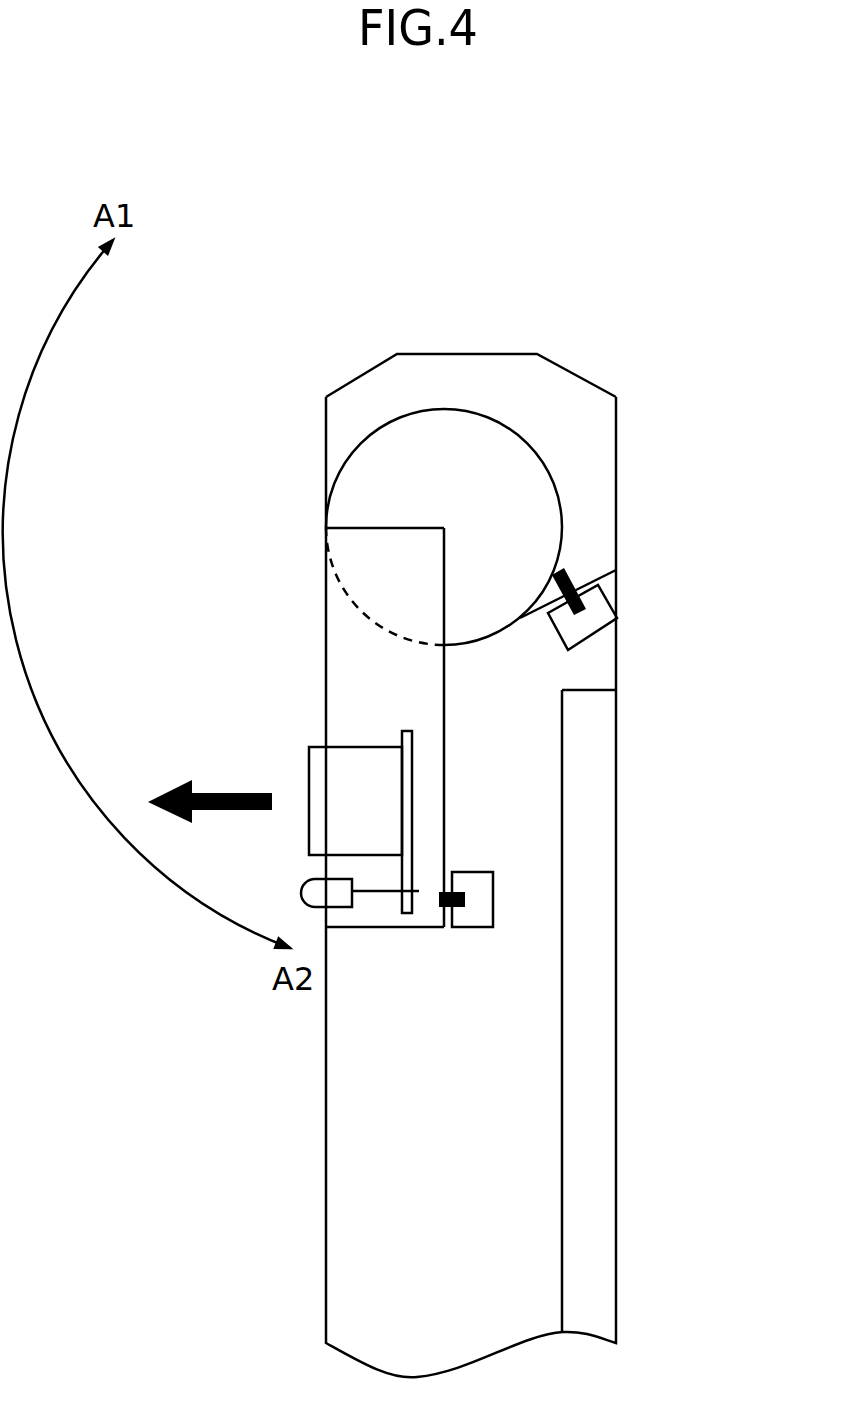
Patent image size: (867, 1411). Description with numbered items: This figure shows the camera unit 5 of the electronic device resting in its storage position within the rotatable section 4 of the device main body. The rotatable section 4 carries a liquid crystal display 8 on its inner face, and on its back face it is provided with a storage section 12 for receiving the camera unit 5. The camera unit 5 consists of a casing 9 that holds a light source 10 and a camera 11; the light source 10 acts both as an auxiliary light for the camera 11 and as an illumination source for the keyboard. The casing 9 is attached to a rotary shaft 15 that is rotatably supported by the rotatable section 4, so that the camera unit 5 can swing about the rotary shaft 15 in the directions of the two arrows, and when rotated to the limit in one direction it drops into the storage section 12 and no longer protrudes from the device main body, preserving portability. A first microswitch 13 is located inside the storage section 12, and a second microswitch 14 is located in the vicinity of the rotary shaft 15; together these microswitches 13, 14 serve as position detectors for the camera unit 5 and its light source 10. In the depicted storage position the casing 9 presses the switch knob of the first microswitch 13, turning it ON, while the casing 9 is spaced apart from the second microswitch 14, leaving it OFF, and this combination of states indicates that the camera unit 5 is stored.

The rotatable section 4 is at (298, 1120).
The camera unit 5 is at (300, 610).
The liquid crystal display 8 is at (603, 1037).
The casing 9 is at (428, 792).
The light source 10 is at (340, 898).
The camera 11 is at (320, 787).
The storage section 12 is at (444, 692).
The first microswitch 13 is at (483, 883).
The second microswitch 14 is at (597, 617).
The rotary shaft 15 is at (548, 503).